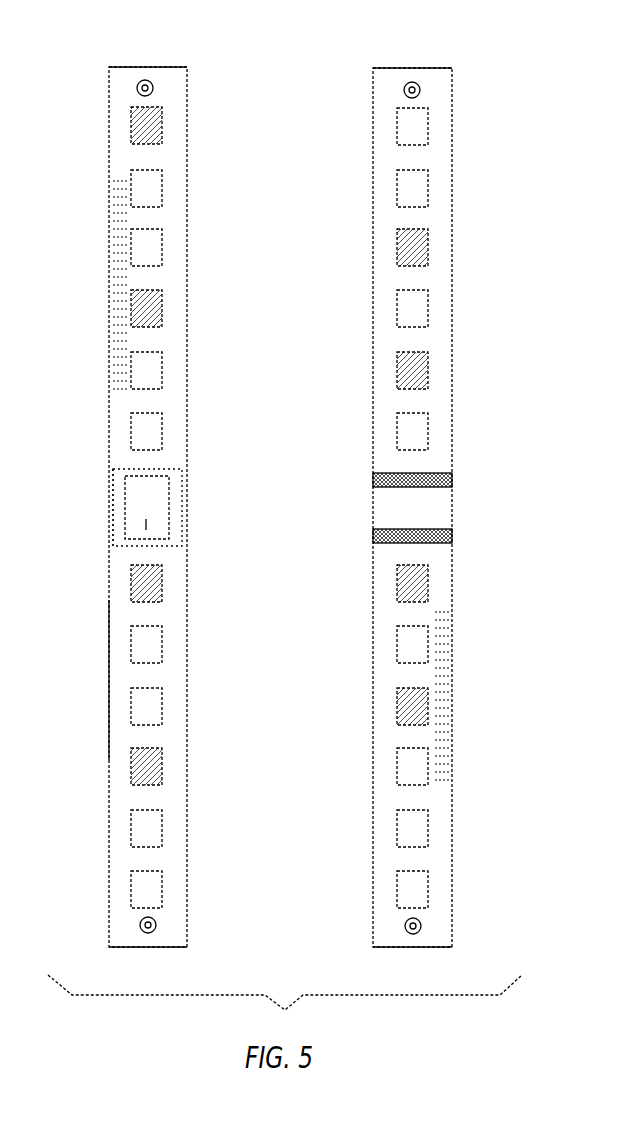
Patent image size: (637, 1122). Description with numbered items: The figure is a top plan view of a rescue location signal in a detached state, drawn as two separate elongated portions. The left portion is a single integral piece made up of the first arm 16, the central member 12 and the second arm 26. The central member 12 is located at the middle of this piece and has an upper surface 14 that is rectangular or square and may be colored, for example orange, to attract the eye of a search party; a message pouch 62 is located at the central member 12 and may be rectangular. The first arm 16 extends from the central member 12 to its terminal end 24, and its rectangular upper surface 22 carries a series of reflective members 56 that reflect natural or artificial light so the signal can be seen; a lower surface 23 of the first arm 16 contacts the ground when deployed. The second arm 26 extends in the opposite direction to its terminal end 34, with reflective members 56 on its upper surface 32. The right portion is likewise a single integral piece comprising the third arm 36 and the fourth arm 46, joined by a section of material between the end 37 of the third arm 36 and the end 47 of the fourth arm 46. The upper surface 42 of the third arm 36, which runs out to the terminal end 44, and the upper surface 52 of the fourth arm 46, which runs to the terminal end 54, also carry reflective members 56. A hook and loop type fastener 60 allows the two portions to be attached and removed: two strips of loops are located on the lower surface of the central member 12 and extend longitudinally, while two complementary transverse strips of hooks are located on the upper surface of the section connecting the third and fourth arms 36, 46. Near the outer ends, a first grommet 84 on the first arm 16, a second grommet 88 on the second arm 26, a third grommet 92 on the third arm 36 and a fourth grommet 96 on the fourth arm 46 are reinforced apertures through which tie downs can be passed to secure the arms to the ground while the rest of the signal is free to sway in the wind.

The central member 12 is at (163, 470).
The upper surface 14 is at (116, 486).
The first arm 16 is at (175, 192).
The upper surface 22 is at (140, 280).
The lower surface 23 is at (140, 398).
The terminal end 24 is at (170, 67).
The second arm 26 is at (138, 675).
The upper surface 32 is at (140, 800).
The terminal end 34 is at (175, 947).
The third arm 36 is at (440, 410).
The end 37 is at (413, 463).
The upper surface 42 is at (443, 365).
The terminal end 44 is at (418, 68).
The fourth arm 46 is at (432, 748).
The end 47 is at (424, 553).
The upper surface 52 is at (425, 857).
The terminal end 54 is at (432, 947).
The reflective members 56 is at (158, 315).
The hook and loop type fastener 60 is at (108, 500).
The message pouch 62 is at (146, 520).
The first grommet 84 is at (153, 92).
The second grommet 88 is at (156, 925).
The third grommet 92 is at (420, 90).
The fourth grommet 96 is at (421, 926).